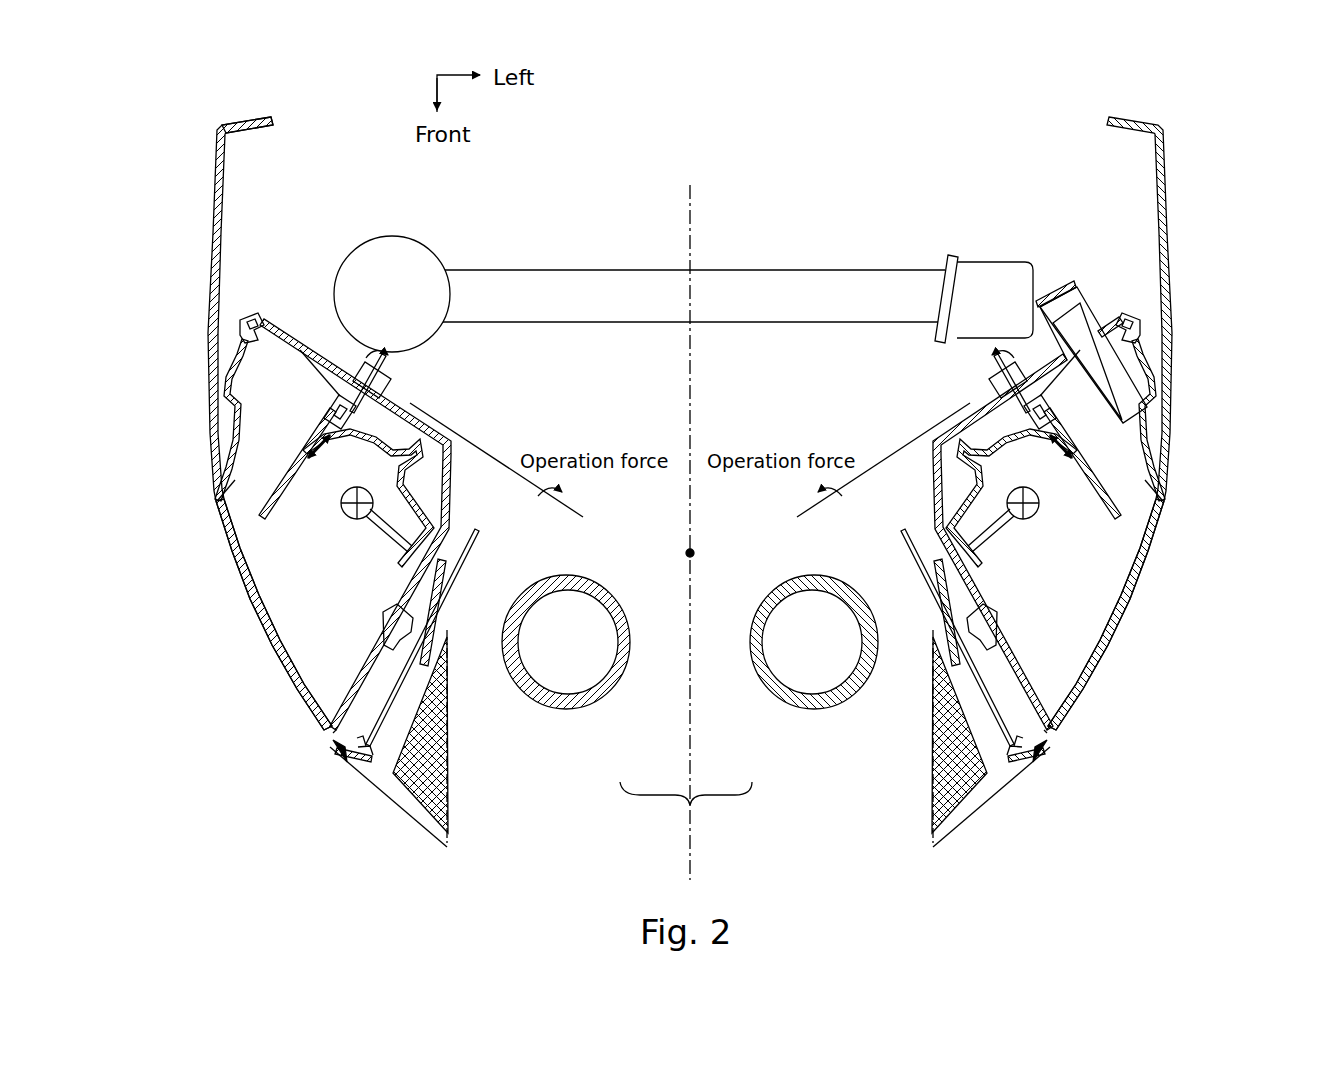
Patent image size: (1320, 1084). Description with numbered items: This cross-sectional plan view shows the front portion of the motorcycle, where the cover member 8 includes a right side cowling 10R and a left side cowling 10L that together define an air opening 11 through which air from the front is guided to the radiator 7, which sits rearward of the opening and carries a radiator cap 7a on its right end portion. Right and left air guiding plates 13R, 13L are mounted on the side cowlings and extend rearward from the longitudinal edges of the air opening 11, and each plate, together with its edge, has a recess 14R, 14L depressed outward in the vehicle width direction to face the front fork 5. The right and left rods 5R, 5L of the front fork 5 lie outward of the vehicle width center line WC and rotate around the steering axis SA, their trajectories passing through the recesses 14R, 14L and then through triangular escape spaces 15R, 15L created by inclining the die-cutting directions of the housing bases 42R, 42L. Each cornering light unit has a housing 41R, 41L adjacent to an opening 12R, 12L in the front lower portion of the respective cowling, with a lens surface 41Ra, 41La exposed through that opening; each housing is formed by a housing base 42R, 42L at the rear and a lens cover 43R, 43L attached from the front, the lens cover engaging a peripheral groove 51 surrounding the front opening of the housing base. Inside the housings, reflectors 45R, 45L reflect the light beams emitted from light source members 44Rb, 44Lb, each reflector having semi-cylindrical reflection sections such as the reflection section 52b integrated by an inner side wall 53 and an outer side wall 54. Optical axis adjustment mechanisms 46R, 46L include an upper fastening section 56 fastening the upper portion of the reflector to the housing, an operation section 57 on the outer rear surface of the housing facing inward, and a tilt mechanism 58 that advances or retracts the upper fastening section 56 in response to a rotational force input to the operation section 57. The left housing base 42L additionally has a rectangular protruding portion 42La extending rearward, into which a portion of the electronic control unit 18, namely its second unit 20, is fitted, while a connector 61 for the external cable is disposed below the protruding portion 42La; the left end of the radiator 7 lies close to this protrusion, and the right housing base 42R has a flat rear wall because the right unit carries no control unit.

The cover member 8 is at (204, 148).
The right side cowling 10R is at (208, 275).
The left side cowling 10L is at (1172, 278).
The opening 12R is at (215, 497).
The opening 12L is at (1165, 497).
The peripheral groove 51 is at (238, 325).
The right housing base 42R is at (455, 440).
The left housing base 42L is at (925, 440).
The protruding portion 42La is at (1062, 297).
The right lens cover 43R is at (250, 598).
The left lens cover 43L is at (1130, 598).
The right joint portion 45R is at (248, 540).
The reflector 45L is at (1132, 540).
The right opening 46R is at (337, 393).
The optical axis adjustment mechanism 46L is at (1040, 393).
The housing 41R is at (318, 745).
The housing 41L is at (1062, 745).
The lens surface 41Ra is at (300, 693).
The lens surface 41La is at (1080, 693).
The right hook portion 44Rb is at (347, 520).
The left light source member 44Lb is at (1033, 520).
The reflection section 52b is at (337, 470).
The inner side wall 53 is at (393, 560).
The outer side wall 54 is at (285, 495).
The upper fastening section 56 is at (355, 412).
The operation section 57 is at (390, 380).
The tilt mechanism 58 is at (356, 360).
The connector 61 is at (1057, 298).
The electronic control unit 18 is at (1163, 310).
The second unit 20 is at (1100, 300).
The radiator 7 is at (520, 270).
The radiator cap 7a is at (405, 245).
The right rod 5R is at (620, 700).
The left rod 5L is at (758, 700).
The front fork 5 is at (686, 807).
The air opening 11 is at (380, 768).
The right air guiding plate 13R is at (428, 663).
The left air guiding plate 13L is at (952, 663).
The recess 14R is at (462, 505).
The recess 14L is at (918, 505).
The escape space 15R is at (440, 778).
The escape space 15L is at (940, 778).
The vehicle width center line WC is at (697, 210).
The steering axis SA is at (696, 550).